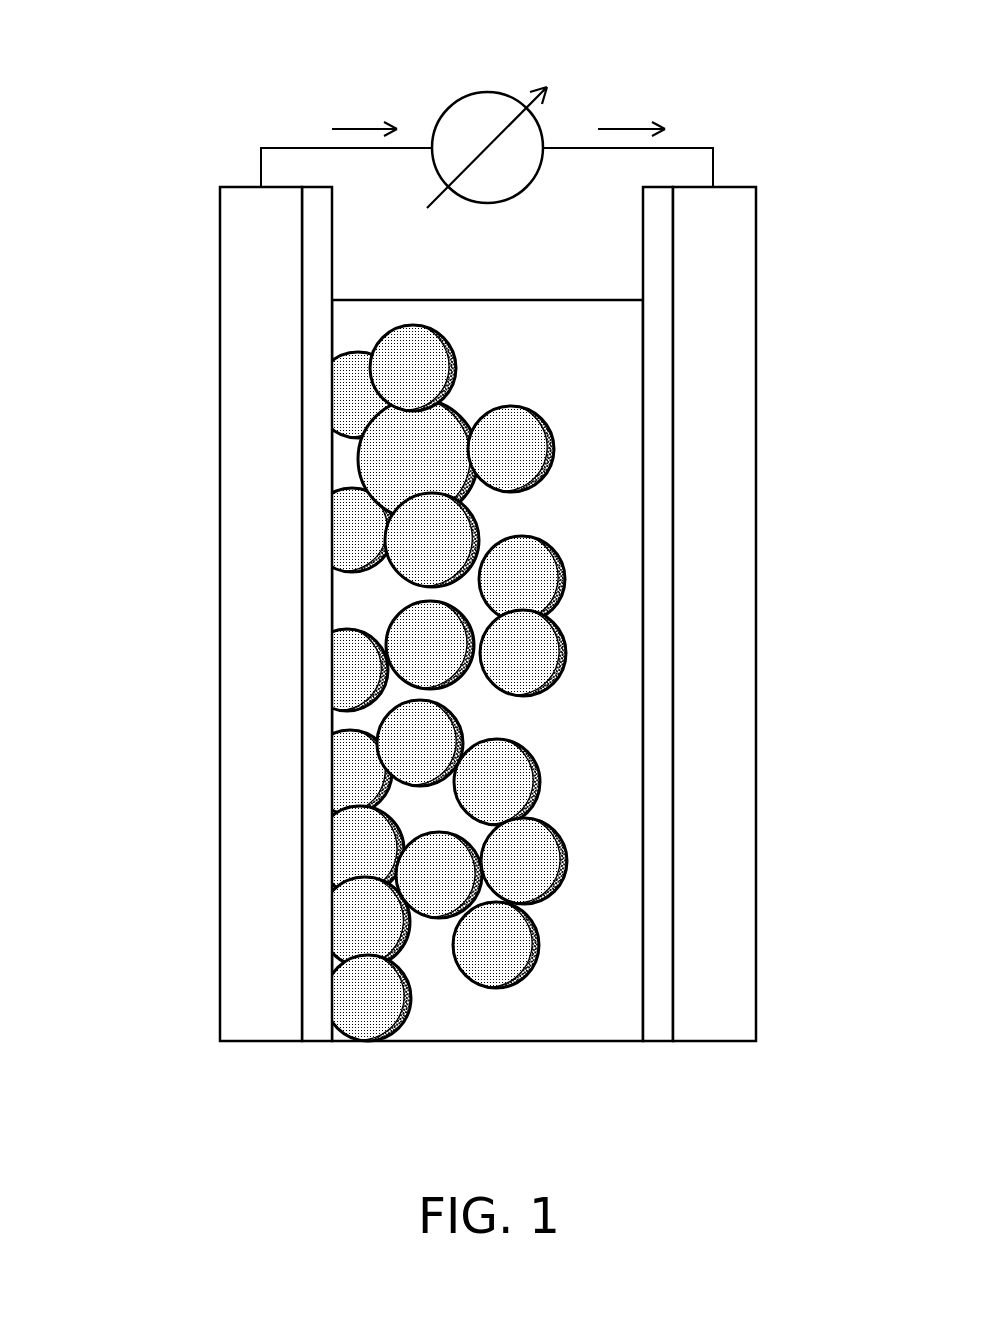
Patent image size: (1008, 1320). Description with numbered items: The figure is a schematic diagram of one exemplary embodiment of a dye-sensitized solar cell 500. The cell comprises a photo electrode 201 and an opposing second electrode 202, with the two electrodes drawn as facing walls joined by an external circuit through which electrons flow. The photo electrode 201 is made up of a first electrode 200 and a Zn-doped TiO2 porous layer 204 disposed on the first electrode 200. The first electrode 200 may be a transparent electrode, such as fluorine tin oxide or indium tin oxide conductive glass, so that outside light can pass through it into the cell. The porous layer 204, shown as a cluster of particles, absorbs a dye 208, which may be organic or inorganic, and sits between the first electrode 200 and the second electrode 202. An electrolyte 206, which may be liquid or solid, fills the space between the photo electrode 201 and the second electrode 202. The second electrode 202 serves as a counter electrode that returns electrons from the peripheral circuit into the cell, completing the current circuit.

The dye-sensitized solar cell 500 is at (175, 97).
The first electrode 200 is at (243, 275).
The photo electrode 201 is at (112, 243).
The second electrode 202 is at (732, 275).
The Zn-doped TiO2 porous layer 204 is at (367, 533).
The electrolyte 206 is at (611, 716).
The dye 208 is at (565, 577).